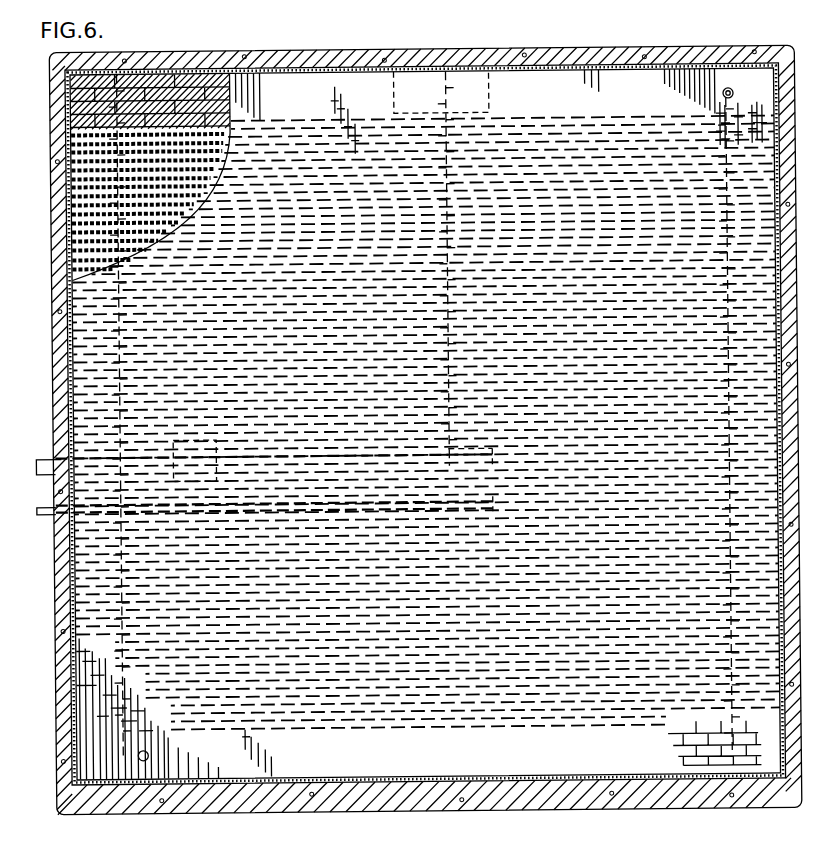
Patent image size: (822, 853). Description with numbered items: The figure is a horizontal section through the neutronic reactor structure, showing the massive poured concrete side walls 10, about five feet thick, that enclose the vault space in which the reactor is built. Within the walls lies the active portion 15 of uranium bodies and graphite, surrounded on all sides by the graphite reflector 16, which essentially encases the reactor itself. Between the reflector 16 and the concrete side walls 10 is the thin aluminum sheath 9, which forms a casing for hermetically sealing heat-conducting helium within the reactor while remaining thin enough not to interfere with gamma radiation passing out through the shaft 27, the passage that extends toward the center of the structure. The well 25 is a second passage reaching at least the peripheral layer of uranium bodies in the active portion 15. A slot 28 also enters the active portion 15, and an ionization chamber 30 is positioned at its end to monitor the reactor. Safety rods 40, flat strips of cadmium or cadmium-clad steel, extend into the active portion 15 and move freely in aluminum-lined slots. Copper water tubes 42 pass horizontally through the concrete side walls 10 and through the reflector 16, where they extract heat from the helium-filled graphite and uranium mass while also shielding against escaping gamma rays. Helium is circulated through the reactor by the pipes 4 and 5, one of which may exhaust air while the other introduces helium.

The helium pipe 4 is at (127, 750).
The helium pipe 5 is at (728, 83).
The aluminum sheath 9 is at (637, 20).
The side wall 10 is at (706, 770).
The active portion 15 is at (296, 114).
The graphite reflector 16 is at (233, 62).
The well 25 is at (457, 78).
The shaft 27 is at (436, 88).
The slot 28 is at (36, 448).
The ionization chamber 30 is at (152, 435).
The safety rod 40 is at (40, 493).
The water tube 42 is at (67, 197).